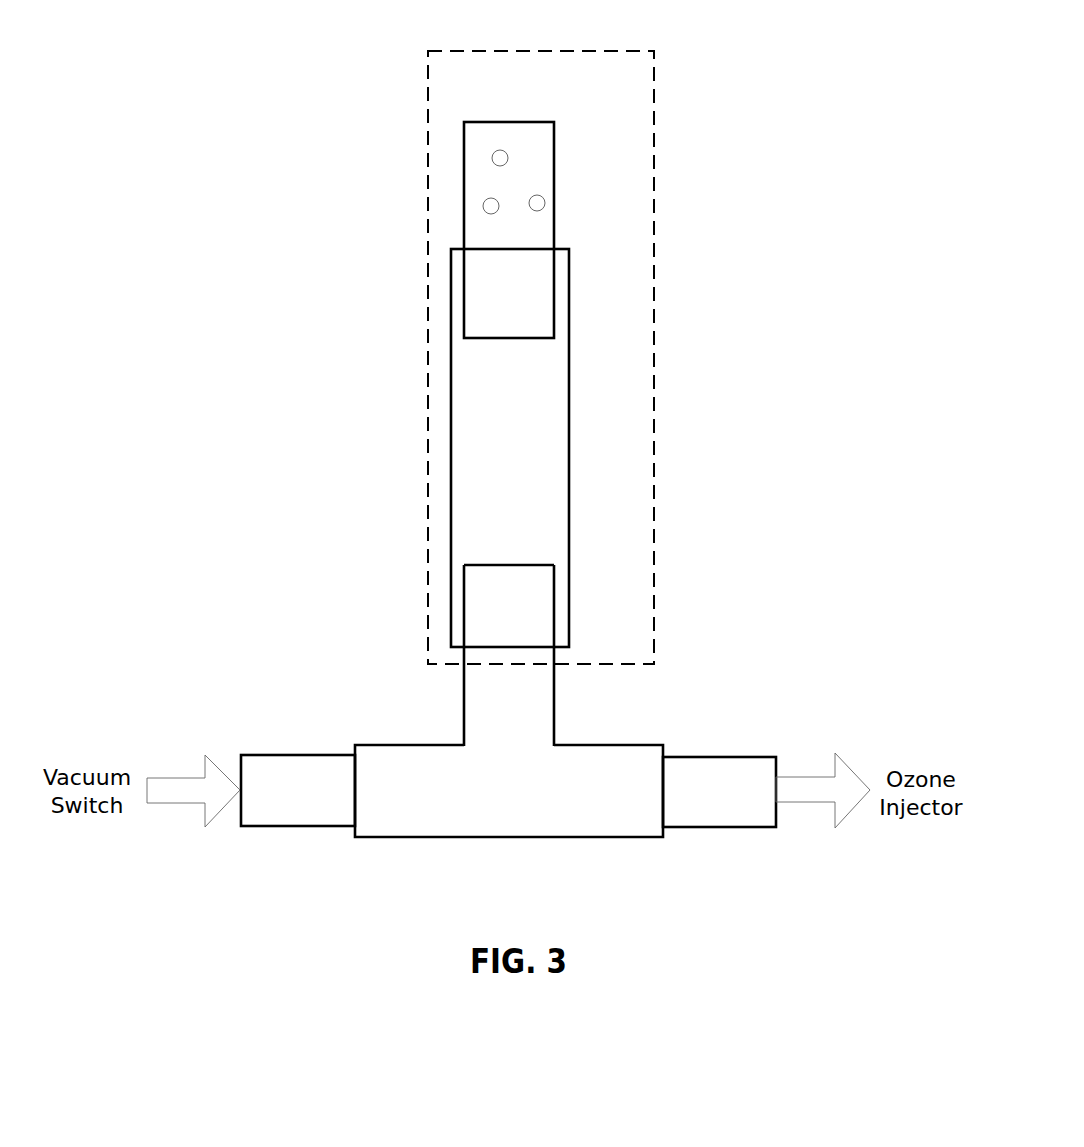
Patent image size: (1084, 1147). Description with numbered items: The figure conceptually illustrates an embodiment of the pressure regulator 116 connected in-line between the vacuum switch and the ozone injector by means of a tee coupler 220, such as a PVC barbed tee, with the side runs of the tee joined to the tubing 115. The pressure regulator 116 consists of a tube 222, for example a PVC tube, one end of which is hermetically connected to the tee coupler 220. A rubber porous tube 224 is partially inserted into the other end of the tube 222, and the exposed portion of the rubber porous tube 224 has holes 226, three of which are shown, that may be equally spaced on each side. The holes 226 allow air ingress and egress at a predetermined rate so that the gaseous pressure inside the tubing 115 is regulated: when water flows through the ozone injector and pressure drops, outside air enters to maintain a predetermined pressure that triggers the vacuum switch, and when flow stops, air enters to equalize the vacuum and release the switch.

The pressure regulator 116 is at (621, 51).
The tube 222 is at (569, 397).
The rubber porous tube 224 is at (545, 122).
The holes 226 is at (492, 158).
The tee coupler 220 is at (565, 745).
The tubing 115 is at (262, 755).